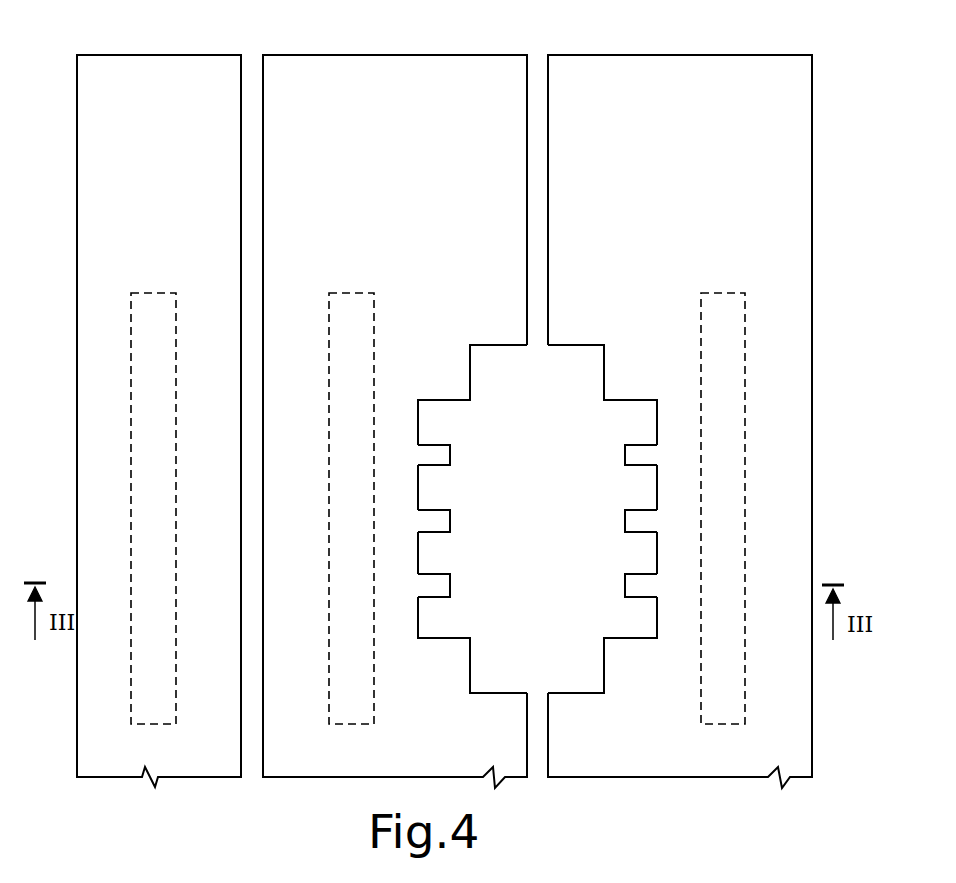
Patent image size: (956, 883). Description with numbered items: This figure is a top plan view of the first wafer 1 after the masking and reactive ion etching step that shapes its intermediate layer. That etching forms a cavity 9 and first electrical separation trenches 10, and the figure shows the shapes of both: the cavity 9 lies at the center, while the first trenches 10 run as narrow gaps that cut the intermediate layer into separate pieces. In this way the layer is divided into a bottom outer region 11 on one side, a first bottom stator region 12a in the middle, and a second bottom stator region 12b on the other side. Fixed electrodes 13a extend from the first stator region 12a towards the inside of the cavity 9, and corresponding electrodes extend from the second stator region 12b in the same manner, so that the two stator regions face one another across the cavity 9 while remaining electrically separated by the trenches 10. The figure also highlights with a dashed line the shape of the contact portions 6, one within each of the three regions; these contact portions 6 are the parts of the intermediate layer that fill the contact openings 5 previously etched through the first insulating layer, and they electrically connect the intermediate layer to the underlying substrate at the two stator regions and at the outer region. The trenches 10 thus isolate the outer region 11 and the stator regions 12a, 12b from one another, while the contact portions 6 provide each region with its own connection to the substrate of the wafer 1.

The first wafer 1 is at (813, 162).
The contact openings 5 is at (132, 339).
The contact portions 6 is at (154, 292).
The cavity 9 is at (533, 552).
The first electrical separation trenches 10 is at (533, 183).
The bottom outer region 11 is at (162, 68).
The first bottom stator region 12a is at (338, 72).
The second bottom stator region 12b is at (717, 67).
The fixed electrodes 13a is at (435, 513).